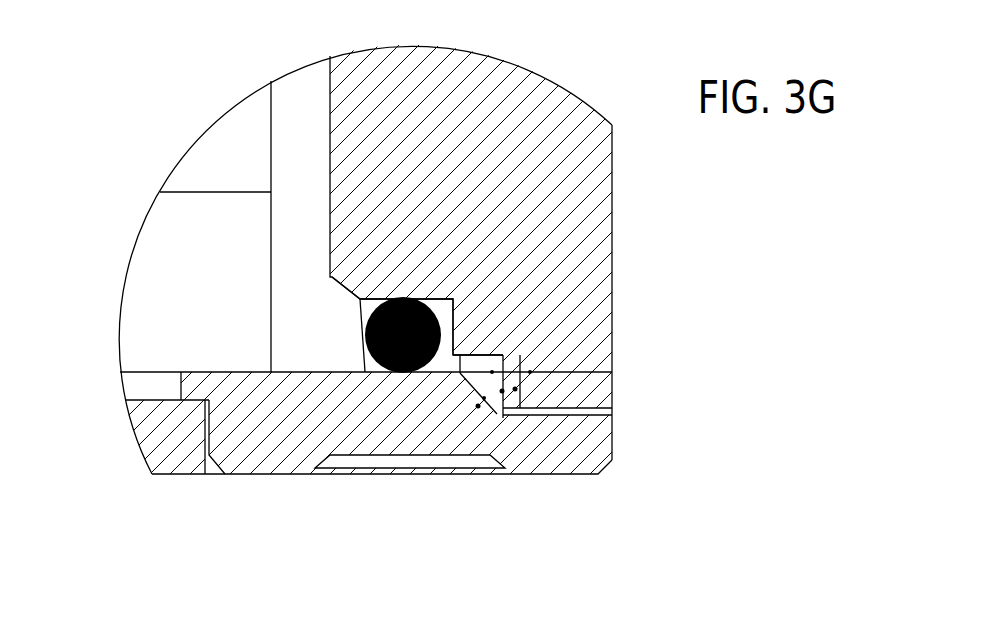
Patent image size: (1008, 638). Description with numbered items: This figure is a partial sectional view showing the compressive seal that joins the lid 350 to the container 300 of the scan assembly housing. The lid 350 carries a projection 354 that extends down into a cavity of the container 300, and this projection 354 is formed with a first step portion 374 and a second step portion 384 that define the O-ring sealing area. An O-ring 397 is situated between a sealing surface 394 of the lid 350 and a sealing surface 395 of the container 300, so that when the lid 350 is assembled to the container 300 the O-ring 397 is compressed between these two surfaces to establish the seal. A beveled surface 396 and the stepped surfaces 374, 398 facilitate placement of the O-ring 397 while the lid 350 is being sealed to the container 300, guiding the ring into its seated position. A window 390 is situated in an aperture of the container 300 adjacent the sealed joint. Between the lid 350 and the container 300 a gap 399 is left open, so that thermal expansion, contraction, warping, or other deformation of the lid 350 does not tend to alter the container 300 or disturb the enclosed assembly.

The container 300 is at (366, 450).
The lid 350 is at (497, 93).
The projection 354 is at (348, 150).
The first step portion 374 is at (475, 353).
The second step portion 384 is at (425, 295).
The window 390 is at (152, 418).
The sealing surface 394 is at (358, 295).
The sealing surface 395 is at (360, 353).
The beveled surface 396 is at (440, 447).
The O-ring 397 is at (410, 295).
The stepped surface 398 is at (510, 390).
The gap 399 is at (612, 412).